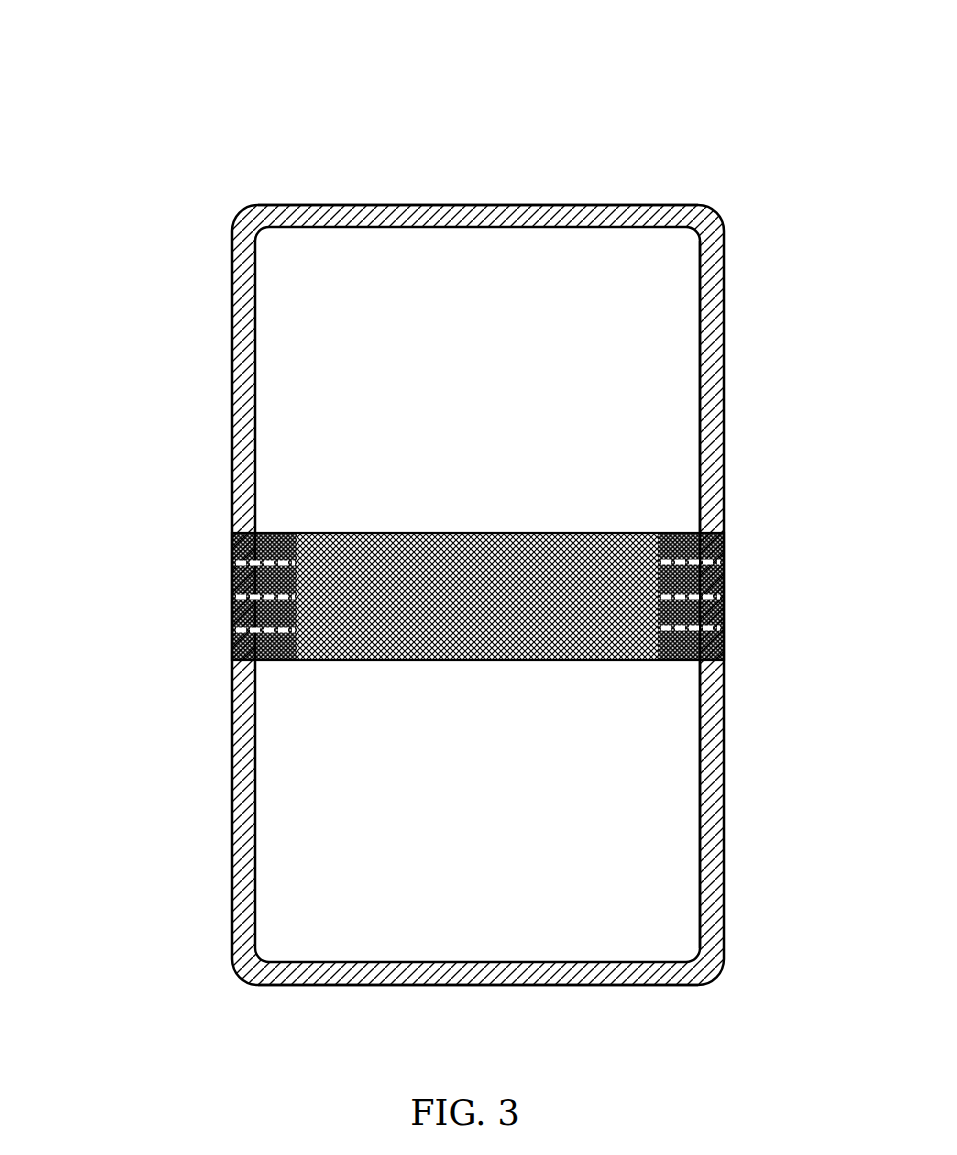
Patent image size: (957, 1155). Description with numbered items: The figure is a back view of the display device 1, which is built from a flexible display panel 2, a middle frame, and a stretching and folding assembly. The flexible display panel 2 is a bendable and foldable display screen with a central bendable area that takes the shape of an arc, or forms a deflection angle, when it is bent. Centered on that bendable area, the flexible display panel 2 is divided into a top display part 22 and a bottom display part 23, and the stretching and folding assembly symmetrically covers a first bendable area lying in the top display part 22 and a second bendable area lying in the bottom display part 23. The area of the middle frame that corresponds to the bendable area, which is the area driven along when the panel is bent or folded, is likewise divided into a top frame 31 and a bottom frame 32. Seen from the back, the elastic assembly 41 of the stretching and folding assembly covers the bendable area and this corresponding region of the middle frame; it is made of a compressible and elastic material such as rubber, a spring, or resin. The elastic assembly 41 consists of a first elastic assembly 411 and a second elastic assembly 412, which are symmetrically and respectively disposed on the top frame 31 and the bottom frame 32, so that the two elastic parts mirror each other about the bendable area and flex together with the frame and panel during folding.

The display device 1 is at (490, 101).
The top frame 31 is at (662, 205).
The bottom frame 32 is at (672, 985).
The elastic assembly 41 is at (182, 603).
The first elastic assembly 411 is at (307, 530).
The second elastic assembly 412 is at (233, 673).
The flexible display panel 2 is at (762, 594).
The top display part 22 is at (682, 478).
The bottom display part 23 is at (682, 762).